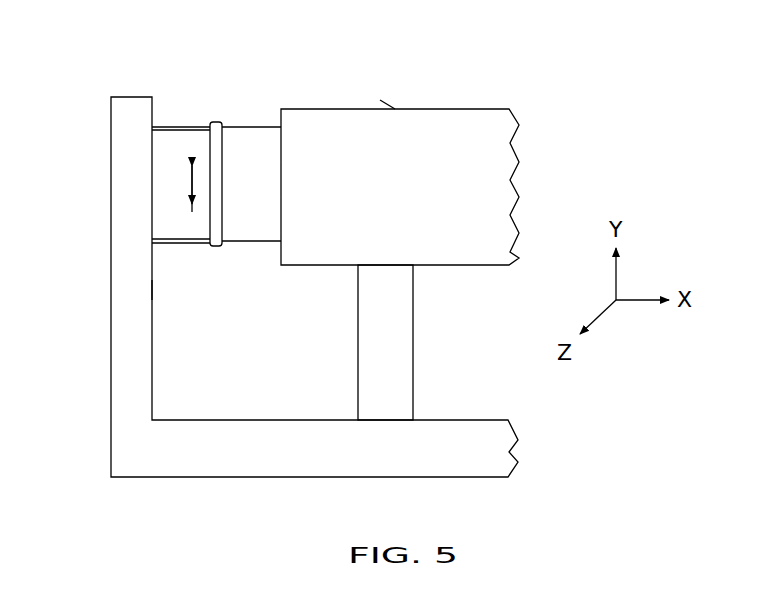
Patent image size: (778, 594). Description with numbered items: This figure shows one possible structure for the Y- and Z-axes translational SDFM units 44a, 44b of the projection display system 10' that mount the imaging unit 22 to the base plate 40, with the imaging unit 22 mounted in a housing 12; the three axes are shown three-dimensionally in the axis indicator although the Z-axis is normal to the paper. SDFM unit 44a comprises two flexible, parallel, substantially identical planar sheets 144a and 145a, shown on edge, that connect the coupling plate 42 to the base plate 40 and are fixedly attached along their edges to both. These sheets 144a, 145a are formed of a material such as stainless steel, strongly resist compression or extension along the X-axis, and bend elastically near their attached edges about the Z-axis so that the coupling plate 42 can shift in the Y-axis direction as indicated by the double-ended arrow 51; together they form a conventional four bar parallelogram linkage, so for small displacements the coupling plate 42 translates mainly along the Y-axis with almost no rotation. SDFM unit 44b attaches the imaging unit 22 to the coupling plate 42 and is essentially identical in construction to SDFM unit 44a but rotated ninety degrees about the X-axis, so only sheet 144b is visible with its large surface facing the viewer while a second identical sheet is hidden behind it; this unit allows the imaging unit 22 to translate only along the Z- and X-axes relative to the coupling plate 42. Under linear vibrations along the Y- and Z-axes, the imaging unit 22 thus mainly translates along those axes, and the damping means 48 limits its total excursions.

The projection display system 10' is at (415, 62).
The housing 12 is at (332, 265).
The imaging unit 22 is at (382, 100).
The base plate 40 is at (153, 413).
The coupling plate 42 is at (215, 122).
The Y-axis translational SDFM unit 44a is at (165, 288).
The Z-axis translational SDFM unit 44b is at (255, 117).
The damping means 48 is at (358, 350).
The double-ended arrow 51 is at (192, 180).
The planar sheet 144a is at (180, 127).
The sheet 144b is at (262, 245).
The planar sheet 145a is at (195, 243).